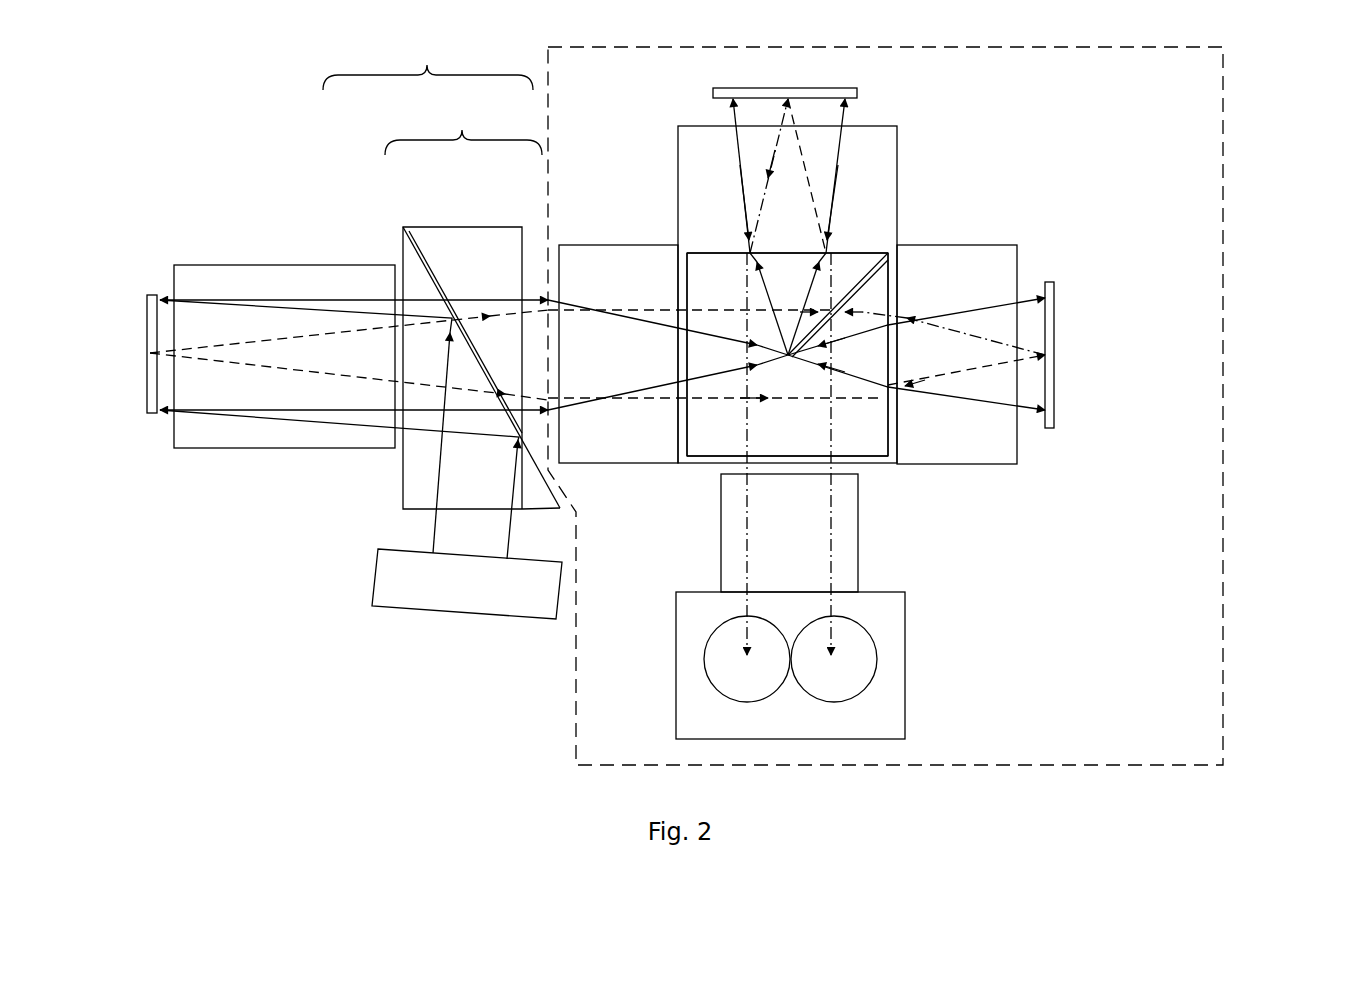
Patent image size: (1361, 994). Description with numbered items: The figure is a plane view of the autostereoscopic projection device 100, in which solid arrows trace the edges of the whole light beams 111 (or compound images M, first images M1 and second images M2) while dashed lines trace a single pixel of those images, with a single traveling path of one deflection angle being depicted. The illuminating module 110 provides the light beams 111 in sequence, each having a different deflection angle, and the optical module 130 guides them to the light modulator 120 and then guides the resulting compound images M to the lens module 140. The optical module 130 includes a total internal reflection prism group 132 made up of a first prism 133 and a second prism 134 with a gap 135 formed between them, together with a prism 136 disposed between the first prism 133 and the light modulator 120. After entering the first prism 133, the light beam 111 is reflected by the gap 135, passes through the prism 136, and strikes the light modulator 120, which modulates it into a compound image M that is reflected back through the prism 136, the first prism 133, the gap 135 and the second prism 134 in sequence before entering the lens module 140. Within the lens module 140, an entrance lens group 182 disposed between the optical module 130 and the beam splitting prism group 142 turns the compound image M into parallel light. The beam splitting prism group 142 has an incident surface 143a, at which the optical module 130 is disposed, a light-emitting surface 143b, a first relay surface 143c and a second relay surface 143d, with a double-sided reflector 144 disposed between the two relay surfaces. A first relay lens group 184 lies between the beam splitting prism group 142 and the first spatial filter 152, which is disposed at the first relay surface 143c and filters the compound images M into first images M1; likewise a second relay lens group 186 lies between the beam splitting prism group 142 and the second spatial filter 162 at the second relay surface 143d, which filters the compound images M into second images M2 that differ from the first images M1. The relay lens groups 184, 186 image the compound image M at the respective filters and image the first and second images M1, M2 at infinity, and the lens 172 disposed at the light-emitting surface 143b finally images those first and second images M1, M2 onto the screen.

The autostereoscopic projection device 100 is at (135, 114).
The illuminating module 110 is at (483, 610).
The light beams 111 is at (433, 529).
The light modulator 120 is at (166, 354).
The optical module 130 is at (428, 61).
The total internal reflection prism group 132 is at (463, 125).
The first prism 133 is at (410, 280).
The second prism 134 is at (508, 282).
The gap 135 is at (448, 292).
The prism 136 is at (341, 280).
The lens module 140 is at (1223, 215).
The beam splitting prism group 142 is at (865, 437).
The incident surface 143a is at (686, 440).
The light-emitting surface 143b is at (707, 457).
The first relay surface 143c is at (697, 253).
The second relay surface 143d is at (890, 432).
The double-sided reflector 144 is at (870, 283).
The first spatial filter 152 is at (857, 93).
The second spatial filter 162 is at (1054, 378).
The lens 172 is at (885, 696).
The entrance lens group 182 is at (582, 270).
The first relay lens group 184 is at (888, 125).
The second relay lens group 186 is at (963, 280).
The compound images M is at (243, 344).
The first images M1 is at (772, 153).
The second images M2 is at (995, 327).